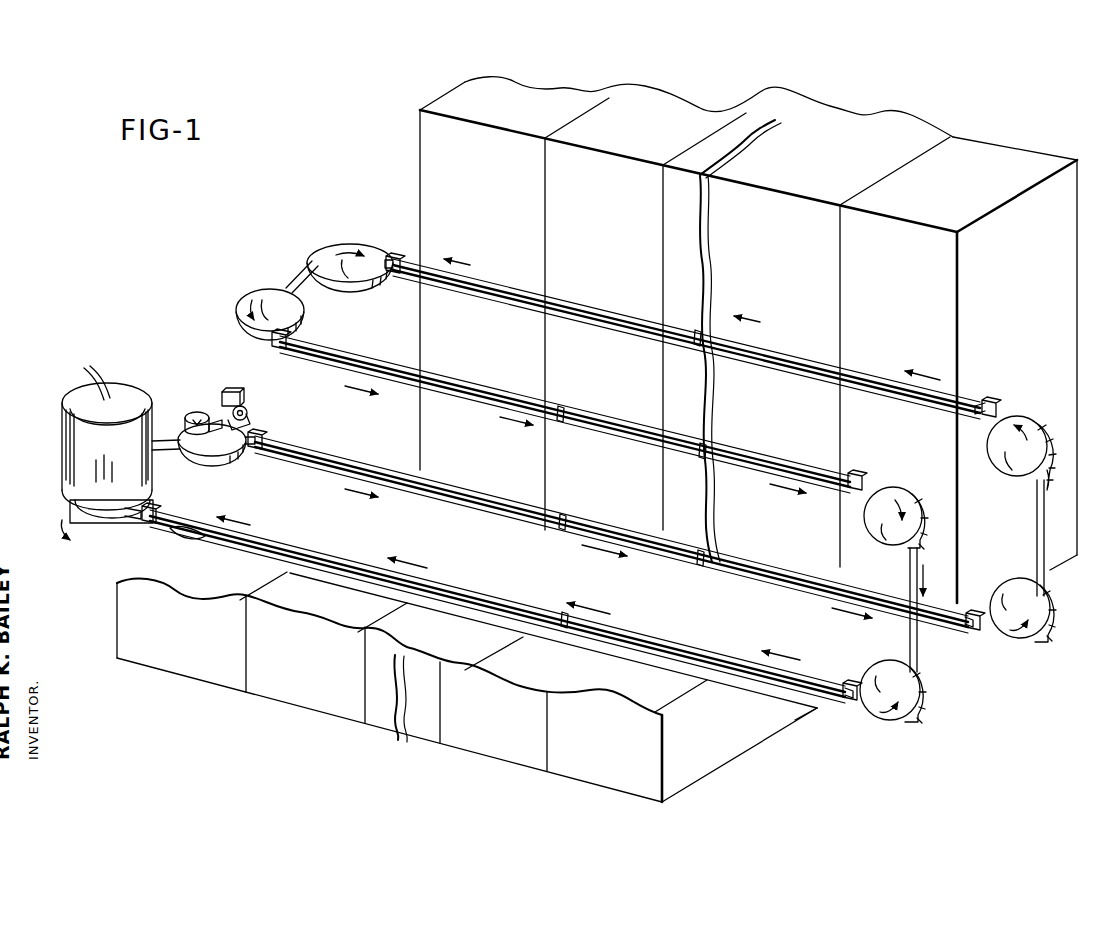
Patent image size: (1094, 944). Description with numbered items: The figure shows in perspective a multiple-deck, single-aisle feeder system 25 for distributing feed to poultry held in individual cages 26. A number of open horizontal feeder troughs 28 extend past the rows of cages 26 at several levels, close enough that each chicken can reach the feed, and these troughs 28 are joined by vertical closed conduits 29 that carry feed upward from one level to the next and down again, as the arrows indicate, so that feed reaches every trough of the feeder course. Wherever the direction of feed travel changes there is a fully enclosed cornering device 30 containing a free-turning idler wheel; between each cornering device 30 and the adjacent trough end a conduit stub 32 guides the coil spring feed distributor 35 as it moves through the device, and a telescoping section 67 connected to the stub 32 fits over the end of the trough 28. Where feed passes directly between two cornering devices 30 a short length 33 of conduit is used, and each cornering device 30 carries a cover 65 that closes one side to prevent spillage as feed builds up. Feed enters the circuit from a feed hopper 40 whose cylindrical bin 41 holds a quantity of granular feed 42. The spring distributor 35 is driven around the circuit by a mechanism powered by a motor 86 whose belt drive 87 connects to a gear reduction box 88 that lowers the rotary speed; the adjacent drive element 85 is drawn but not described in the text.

The feeder system 25 is at (180, 320).
The cages 26 is at (630, 106).
The feeder troughs 28 is at (583, 305).
The vertical closed conduits 29 is at (1036, 530).
The cornering device 30 is at (338, 243).
The conduit stub 32 is at (394, 258).
The short length of conduit 33 is at (298, 272).
The coil spring feed distributor 35 is at (180, 536).
The feed hopper 40 is at (79, 429).
The cylindrical bin 41 is at (72, 462).
The feed 42 is at (90, 390).
The cover 65 is at (302, 300).
The telescoping section 67 is at (402, 274).
The feeder 85 is at (198, 396).
The motor 86 is at (232, 392).
The belt drive 87 is at (248, 415).
The gear reduction box 88 is at (195, 420).